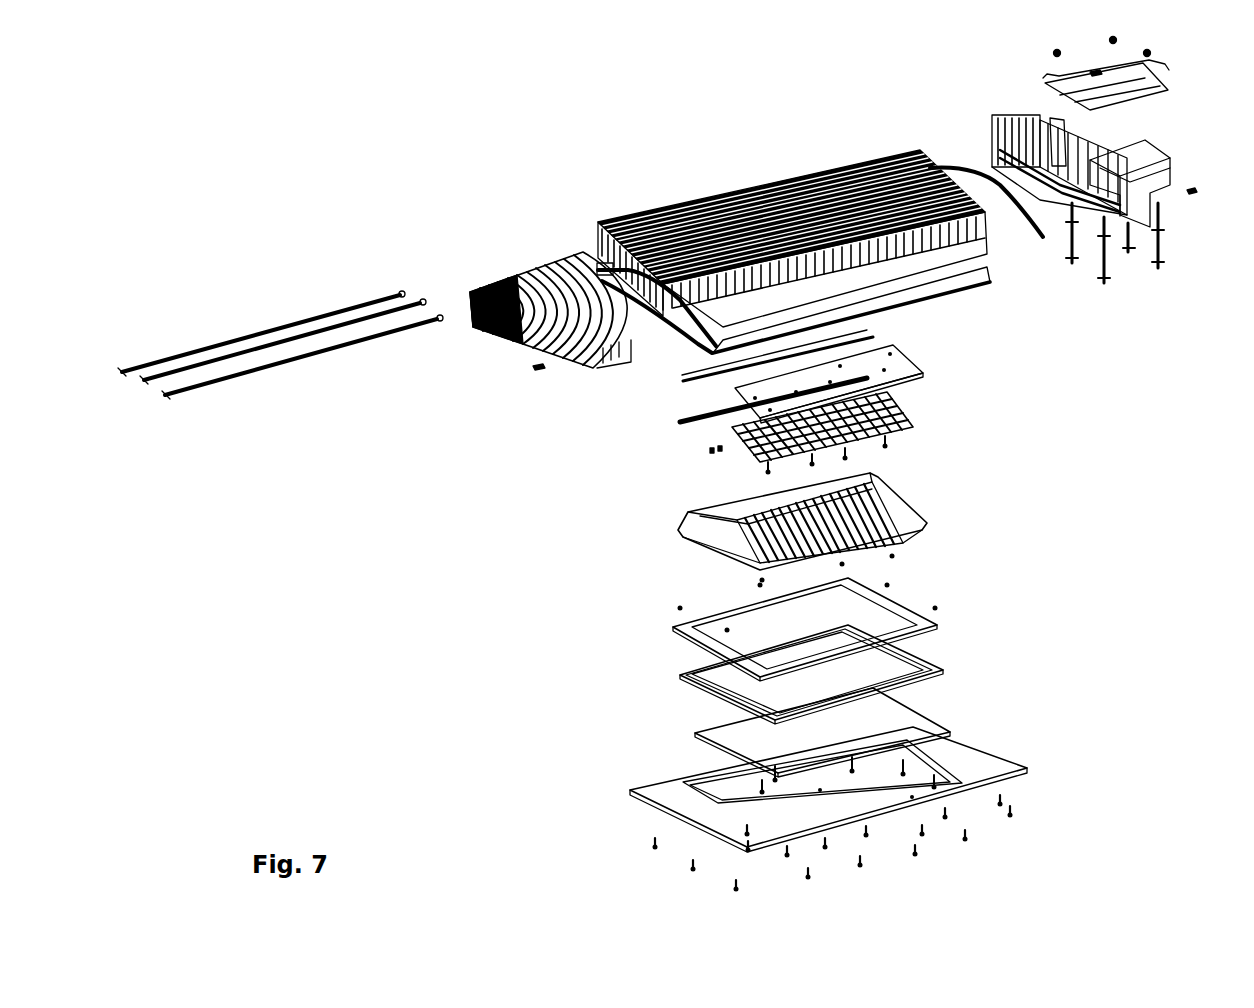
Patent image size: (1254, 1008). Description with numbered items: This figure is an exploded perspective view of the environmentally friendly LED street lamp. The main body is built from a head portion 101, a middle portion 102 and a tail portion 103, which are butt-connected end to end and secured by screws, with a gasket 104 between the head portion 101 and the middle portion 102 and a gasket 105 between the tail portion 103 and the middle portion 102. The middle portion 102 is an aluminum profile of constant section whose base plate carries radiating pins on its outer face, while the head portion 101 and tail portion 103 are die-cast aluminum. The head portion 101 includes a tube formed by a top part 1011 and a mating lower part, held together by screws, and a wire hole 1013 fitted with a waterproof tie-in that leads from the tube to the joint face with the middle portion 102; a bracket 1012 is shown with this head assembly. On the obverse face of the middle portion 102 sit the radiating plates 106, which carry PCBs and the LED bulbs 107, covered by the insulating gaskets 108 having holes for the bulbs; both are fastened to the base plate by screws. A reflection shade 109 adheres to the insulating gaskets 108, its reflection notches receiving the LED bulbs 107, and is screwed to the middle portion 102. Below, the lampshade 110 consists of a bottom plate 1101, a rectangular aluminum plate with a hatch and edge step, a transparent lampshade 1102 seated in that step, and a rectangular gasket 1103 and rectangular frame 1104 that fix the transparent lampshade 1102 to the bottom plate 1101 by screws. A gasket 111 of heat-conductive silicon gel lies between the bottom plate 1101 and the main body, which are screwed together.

The head portion 101 is at (1030, 100).
The top part 1011 is at (1140, 73).
The connector bracket 1012 is at (1160, 162).
The wire hole 1013 is at (1060, 158).
The middle portion 102 is at (943, 257).
The tail portion 103 is at (617, 348).
The gasket 104 is at (963, 167).
The gasket 105 is at (597, 263).
The radiating plate 106 is at (913, 380).
The LED bulb 107 is at (707, 378).
The insulating gasket 108 is at (907, 425).
The reflection shade 109 is at (913, 543).
The lampshade 110 is at (632, 612).
The bottom plate 1101 is at (977, 763).
The transparent lampshade 1102 is at (877, 713).
The rectangular gasket 1103 is at (933, 658).
The rectangular frame 1104 is at (933, 613).
The gasket 111 is at (915, 303).